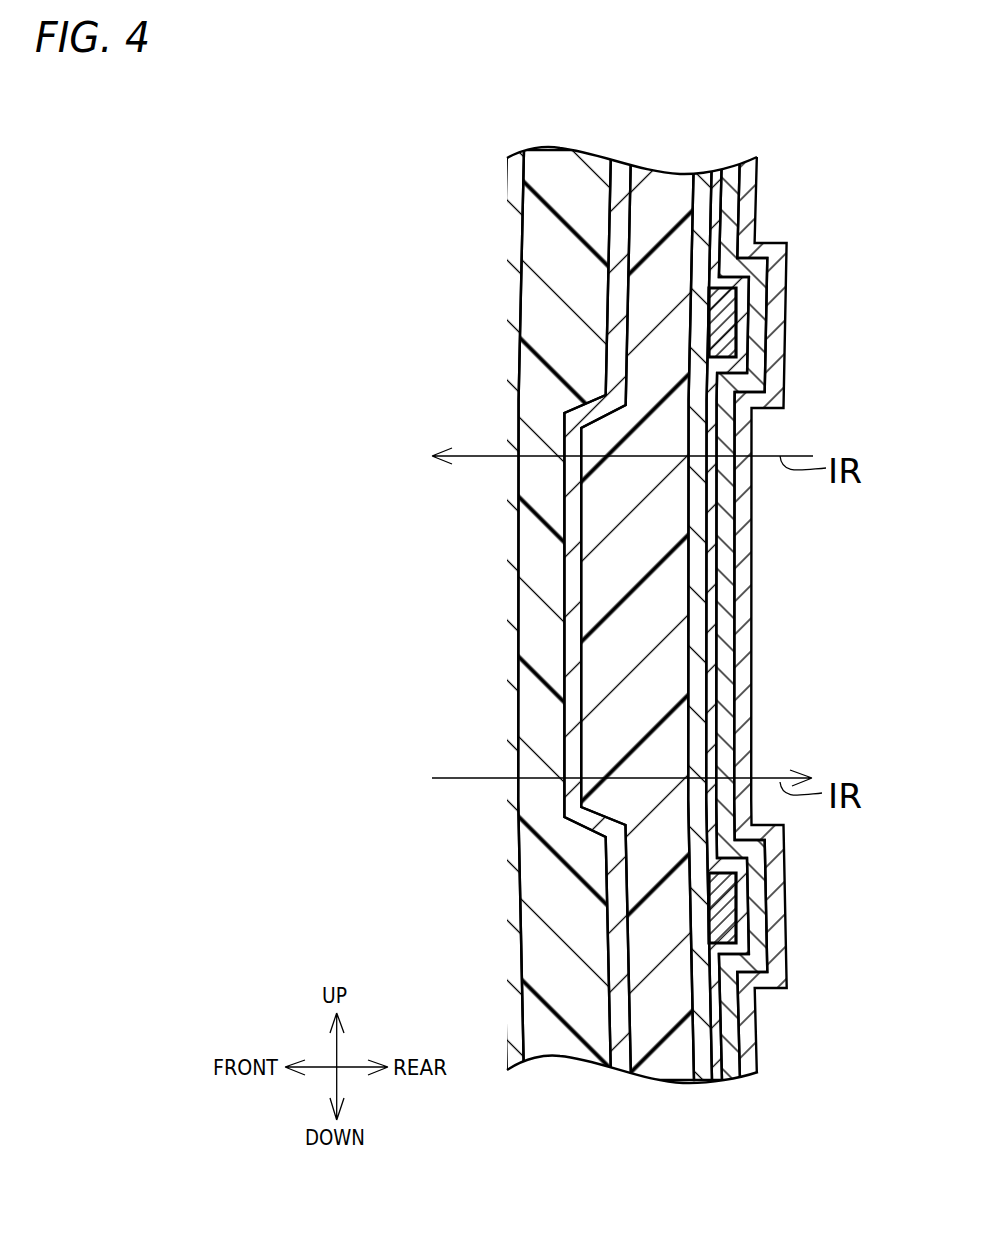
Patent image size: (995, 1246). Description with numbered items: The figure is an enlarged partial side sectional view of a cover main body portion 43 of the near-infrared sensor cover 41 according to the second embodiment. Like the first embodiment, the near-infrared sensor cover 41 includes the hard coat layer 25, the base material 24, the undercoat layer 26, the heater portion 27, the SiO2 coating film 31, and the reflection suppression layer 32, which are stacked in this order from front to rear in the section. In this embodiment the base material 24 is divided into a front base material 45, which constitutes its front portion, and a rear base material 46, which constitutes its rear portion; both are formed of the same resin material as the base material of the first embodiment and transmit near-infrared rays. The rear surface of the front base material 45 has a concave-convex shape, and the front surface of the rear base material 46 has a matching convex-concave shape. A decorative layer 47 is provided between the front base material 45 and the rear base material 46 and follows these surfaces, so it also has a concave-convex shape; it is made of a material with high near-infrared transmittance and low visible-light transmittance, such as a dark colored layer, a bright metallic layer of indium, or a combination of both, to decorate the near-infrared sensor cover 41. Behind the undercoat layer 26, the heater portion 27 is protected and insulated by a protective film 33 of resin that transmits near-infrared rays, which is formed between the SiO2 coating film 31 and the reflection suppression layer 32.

The cover main body portion 43 is at (393, 152).
The near-infrared sensor cover 41 is at (391, 165).
The base material 24 is at (428, 627).
The hard coat layer 25 is at (506, 226).
The undercoat layer 26 is at (700, 518).
The heater portion 27 is at (731, 319).
The SiO2 coating film 31 is at (710, 580).
The reflection suppression layer 32 is at (748, 650).
The protective film 33 is at (723, 613).
The front base material 45 is at (527, 630).
The rear base material 46 is at (587, 677).
The decorative layer 47 is at (560, 483).